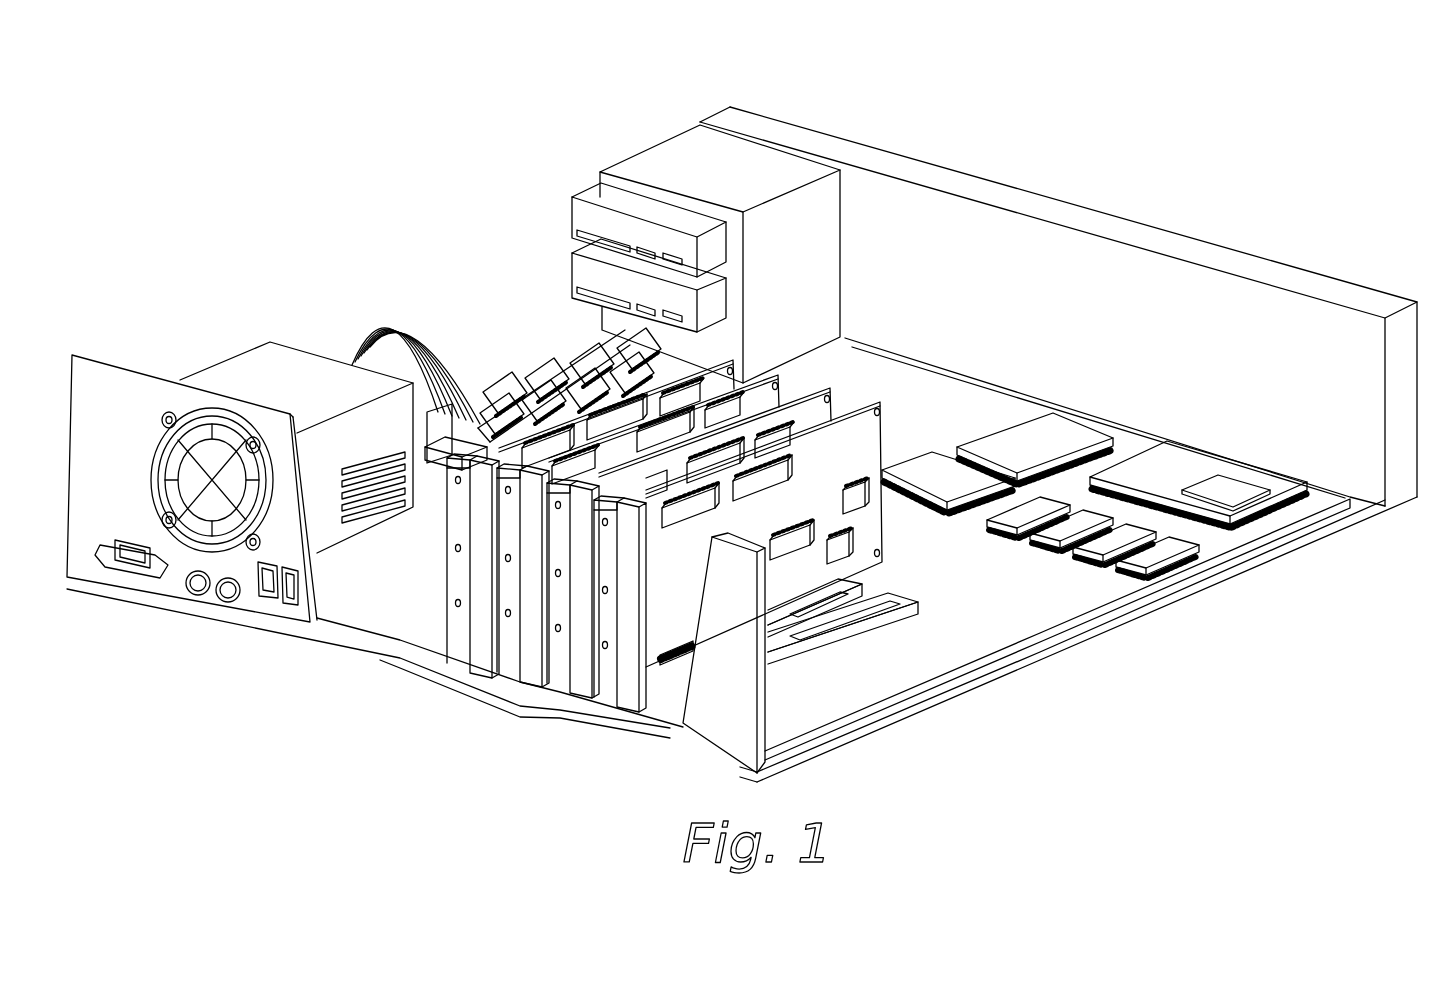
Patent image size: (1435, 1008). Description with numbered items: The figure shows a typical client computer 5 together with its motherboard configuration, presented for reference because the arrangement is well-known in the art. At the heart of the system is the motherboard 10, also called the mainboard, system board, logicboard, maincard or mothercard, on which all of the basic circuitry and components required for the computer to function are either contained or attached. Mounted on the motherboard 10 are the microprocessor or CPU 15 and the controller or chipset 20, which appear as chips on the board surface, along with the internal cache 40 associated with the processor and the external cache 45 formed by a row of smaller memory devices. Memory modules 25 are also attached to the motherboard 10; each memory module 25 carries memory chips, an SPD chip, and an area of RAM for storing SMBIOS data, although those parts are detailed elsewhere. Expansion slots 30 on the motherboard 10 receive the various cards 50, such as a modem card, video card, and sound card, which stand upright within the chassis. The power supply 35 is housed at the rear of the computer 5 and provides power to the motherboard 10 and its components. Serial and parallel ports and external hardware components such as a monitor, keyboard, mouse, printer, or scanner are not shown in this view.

The client computer 5 is at (424, 196).
The motherboard 10 is at (995, 630).
The microprocessor or CPU 15 is at (1165, 470).
The controller or chipset 20 is at (930, 465).
The memory modules 25 is at (547, 357).
The expansion slots 30 is at (777, 652).
The power supply 35 is at (292, 341).
The internal cache 40 is at (1237, 487).
The external cache 45 is at (1180, 555).
The cards 50 is at (532, 663).